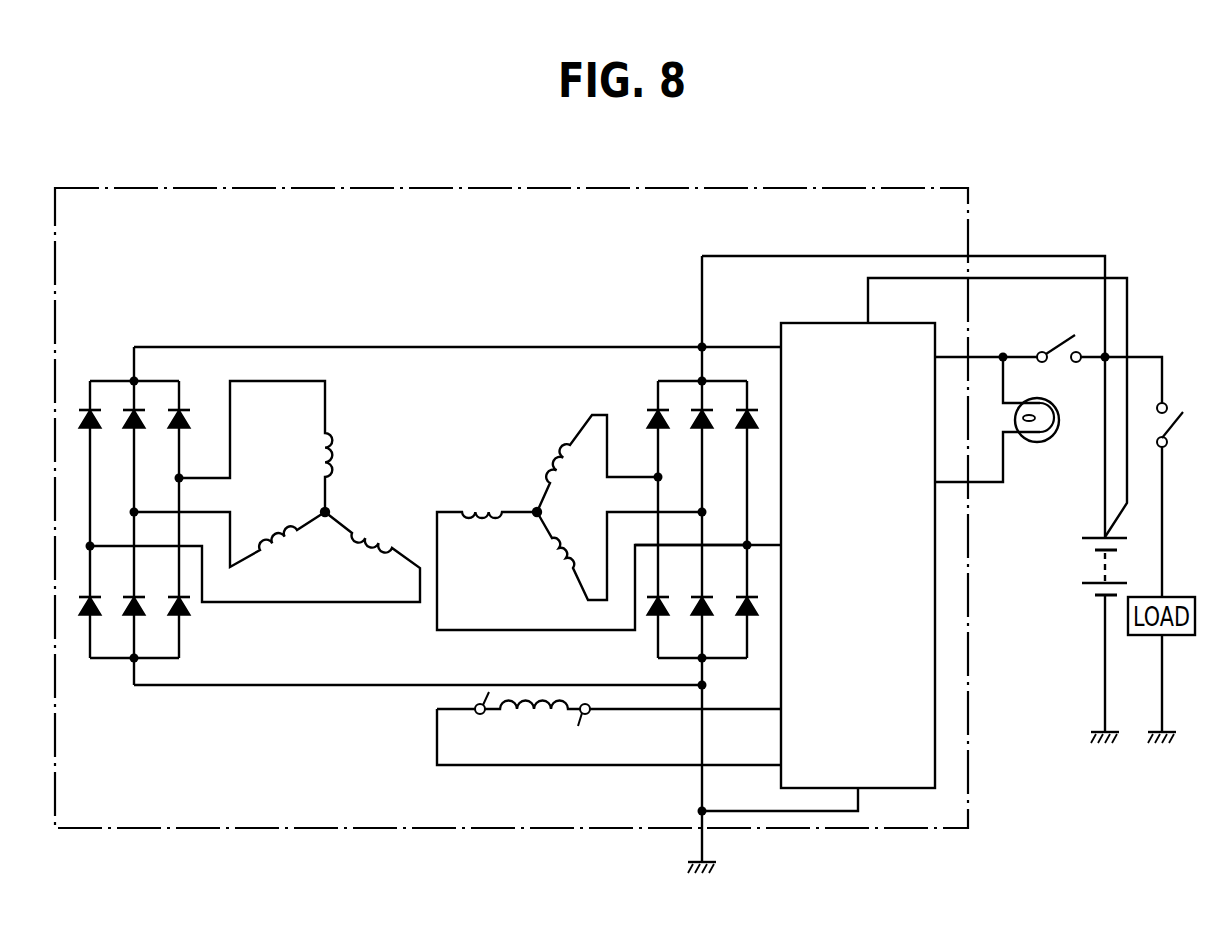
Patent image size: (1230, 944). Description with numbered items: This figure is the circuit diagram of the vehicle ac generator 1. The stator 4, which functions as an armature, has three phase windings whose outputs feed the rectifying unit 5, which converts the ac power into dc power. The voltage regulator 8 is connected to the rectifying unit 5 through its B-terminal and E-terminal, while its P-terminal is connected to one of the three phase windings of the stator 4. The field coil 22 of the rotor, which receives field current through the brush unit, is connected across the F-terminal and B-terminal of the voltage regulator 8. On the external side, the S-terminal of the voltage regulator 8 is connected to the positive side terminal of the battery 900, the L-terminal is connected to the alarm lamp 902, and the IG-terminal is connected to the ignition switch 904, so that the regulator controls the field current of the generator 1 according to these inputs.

The ac generator 1 is at (945, 186).
The stator 4 is at (366, 615).
The rectifying unit 5 is at (112, 381).
The voltage regulator 8 is at (817, 323).
The field coil 22 is at (535, 723).
The battery 900 is at (1088, 592).
The alarm lamp 902 is at (1043, 442).
The ignition switch 904 is at (1067, 340).